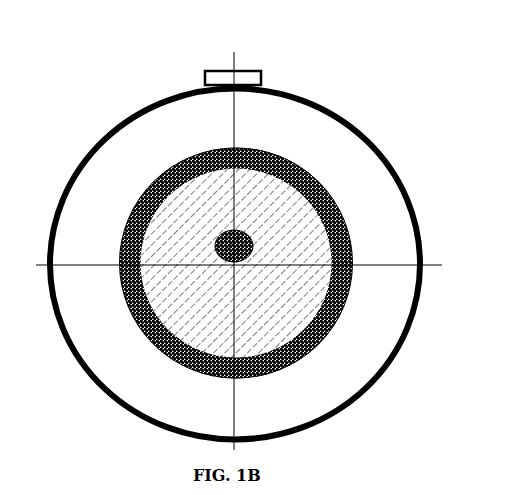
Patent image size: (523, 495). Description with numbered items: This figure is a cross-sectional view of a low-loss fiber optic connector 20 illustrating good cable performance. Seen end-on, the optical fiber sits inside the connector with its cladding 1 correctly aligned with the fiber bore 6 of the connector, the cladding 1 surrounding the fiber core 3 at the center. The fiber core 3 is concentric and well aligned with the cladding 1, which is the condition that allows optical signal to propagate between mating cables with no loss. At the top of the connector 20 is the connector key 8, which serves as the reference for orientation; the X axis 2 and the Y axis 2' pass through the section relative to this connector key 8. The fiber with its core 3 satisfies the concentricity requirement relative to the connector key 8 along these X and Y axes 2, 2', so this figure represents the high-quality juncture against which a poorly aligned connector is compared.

The low-loss fiber optic connector 20 is at (95, 145).
The connector key 8 is at (261, 78).
The X axis 2 is at (239, 326).
The Y axis 2' is at (283, 265).
The cladding 1 is at (127, 218).
The fiber bore 6 is at (317, 338).
The fiber core 3 is at (217, 255).